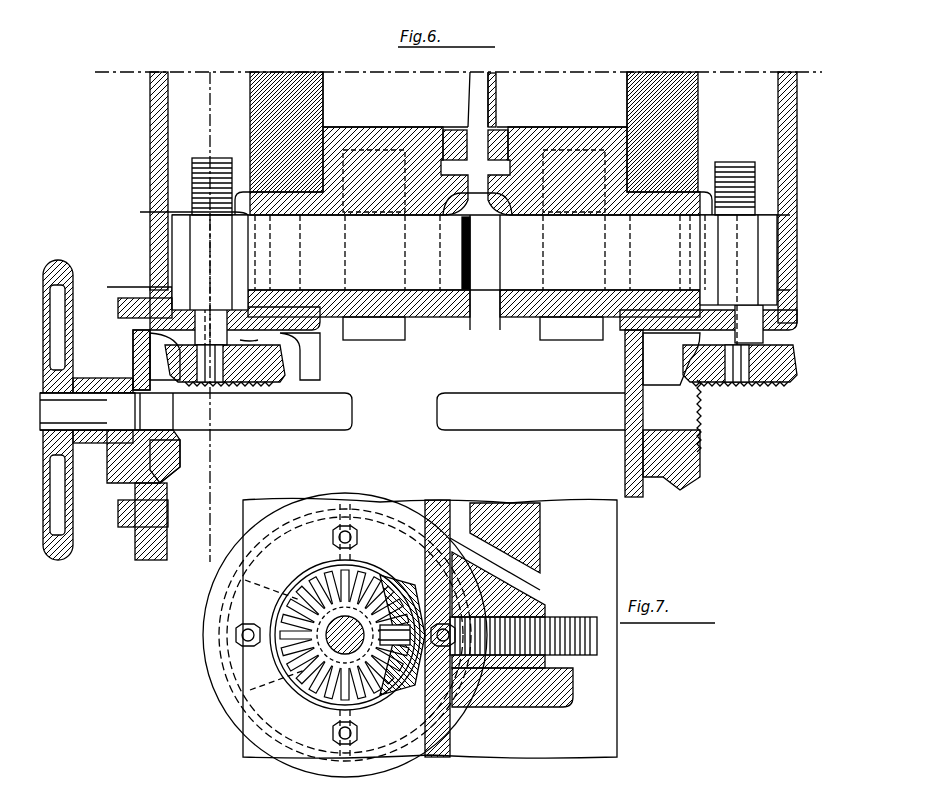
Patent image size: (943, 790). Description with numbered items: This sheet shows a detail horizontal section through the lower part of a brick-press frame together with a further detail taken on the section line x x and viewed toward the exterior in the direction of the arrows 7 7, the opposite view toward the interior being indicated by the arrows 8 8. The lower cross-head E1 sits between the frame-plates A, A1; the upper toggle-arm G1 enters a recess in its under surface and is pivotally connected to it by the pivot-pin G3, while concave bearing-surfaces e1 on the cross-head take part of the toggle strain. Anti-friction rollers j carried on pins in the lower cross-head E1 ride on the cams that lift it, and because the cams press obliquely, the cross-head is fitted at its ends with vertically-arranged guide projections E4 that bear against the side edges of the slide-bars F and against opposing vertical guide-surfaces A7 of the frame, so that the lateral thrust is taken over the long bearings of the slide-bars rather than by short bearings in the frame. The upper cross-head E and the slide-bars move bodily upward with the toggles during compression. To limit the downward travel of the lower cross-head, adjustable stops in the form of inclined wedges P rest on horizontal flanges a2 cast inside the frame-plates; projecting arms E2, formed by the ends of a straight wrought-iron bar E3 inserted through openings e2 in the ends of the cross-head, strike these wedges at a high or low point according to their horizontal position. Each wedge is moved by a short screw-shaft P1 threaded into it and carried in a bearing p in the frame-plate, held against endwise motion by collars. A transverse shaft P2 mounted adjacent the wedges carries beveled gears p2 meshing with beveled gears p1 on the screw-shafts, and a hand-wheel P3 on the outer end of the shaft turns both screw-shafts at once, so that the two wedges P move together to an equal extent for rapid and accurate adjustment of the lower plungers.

In FIG. 6, the frame-plate A is at (152, 237).
In FIG. 7, the frame-plate A is at (428, 546).
In FIG. 6, the frame-plate A1 is at (818, 250).
In FIG. 6, the vertical guide-surface A7 is at (425, 359).
In FIG. 6, the slide-bar F is at (300, 75).
In FIG. 6, the upper toggle-arm G1 is at (494, 153).
In FIG. 6, the pivot-pin G3 is at (475, 99).
In FIG. 6, the valve body E is at (475, 171).
In FIG. 6, the lower cross-head E1 is at (490, 322).
In FIG. 6, the projecting arm E2 is at (474, 280).
In FIG. 7, the projecting arm E2 is at (530, 540).
In FIG. 6, the wrought-iron bar E3 is at (481, 252).
In FIG. 6, the guide projection E4 is at (292, 298).
In FIG. 7, the concave bearing-surface e1 is at (515, 553).
In FIG. 6, the opening e2 is at (258, 278).
In FIG. 6, the horizontal flange a2 is at (180, 190).
In FIG. 7, the horizontal flange a2 is at (560, 688).
In FIG. 6, the wedge P is at (820, 218).
In FIG. 7, the wedge P is at (528, 607).
In FIG. 6, the screw-shaft P1 is at (220, 165).
In FIG. 7, the screw-shaft P1 is at (585, 617).
In FIG. 6, the transverse shaft P2 is at (330, 400).
In FIG. 7, the transverse shaft P2 is at (290, 618).
In FIG. 6, the hand-wheel P3 is at (68, 345).
In FIG. 7, the hand-wheel P3 is at (212, 613).
In FIG. 6, the bearing p is at (806, 330).
In FIG. 6, the beveled gear p1 is at (262, 360).
In FIG. 7, the beveled gear p1 is at (405, 680).
In FIG. 6, the beveled gear p2 is at (182, 440).
In FIG. 7, the beveled gear p2 is at (300, 685).
In FIG. 6, the anti-friction roller j is at (397, 333).
In FIG. 6, the section line x is at (207, 315).
In FIG. 6, the arrows 7 is at (204, 100).
In FIG. 6, the arrows 8 is at (168, 85).